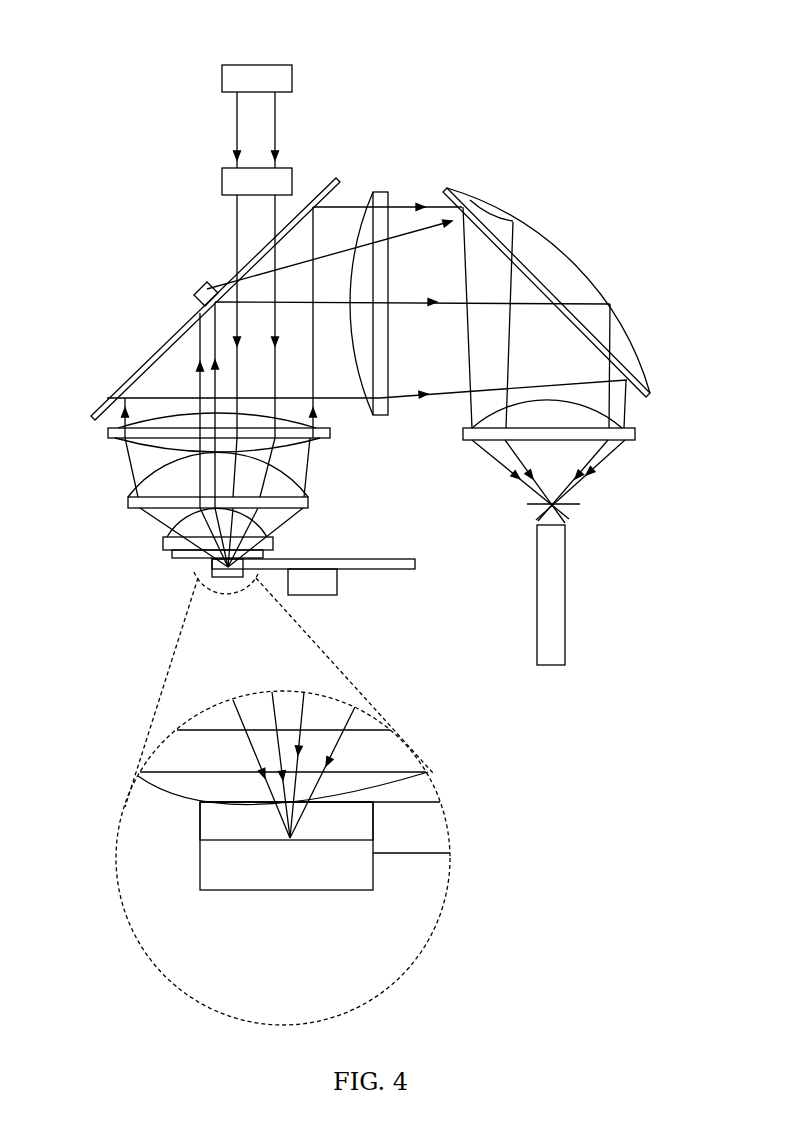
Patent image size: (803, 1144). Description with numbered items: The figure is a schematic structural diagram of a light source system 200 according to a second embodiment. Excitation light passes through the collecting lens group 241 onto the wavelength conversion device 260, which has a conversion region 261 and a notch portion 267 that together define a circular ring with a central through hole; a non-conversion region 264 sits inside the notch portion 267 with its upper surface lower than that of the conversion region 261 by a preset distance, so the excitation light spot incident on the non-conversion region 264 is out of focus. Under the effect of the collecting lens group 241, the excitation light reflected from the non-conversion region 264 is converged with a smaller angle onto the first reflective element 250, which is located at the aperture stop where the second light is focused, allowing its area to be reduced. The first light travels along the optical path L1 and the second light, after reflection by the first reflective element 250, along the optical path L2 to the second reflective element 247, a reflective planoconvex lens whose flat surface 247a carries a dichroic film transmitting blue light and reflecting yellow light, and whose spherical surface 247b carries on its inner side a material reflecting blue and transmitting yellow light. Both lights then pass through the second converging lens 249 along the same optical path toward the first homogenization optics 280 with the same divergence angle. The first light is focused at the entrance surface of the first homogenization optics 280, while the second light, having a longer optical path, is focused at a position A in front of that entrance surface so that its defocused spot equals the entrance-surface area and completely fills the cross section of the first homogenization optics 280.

The light source system 200 is at (150, 37).
The first reflective element 250 is at (197, 288).
The optical path L1 is at (407, 196).
The optical path L2 is at (468, 204).
The second reflective element 247 is at (578, 292).
The flat surface 247a is at (573, 317).
The spherical surface 247b is at (631, 343).
The second converging lens 249 is at (635, 432).
The position A is at (564, 501).
The first homogenization optics 280 is at (550, 577).
The collecting lens group 241 is at (286, 482).
The wavelength conversion device 260 is at (382, 573).
The conversion region 261 is at (364, 561).
The non-conversion region 264 is at (257, 852).
The notch portion 267 is at (243, 825).